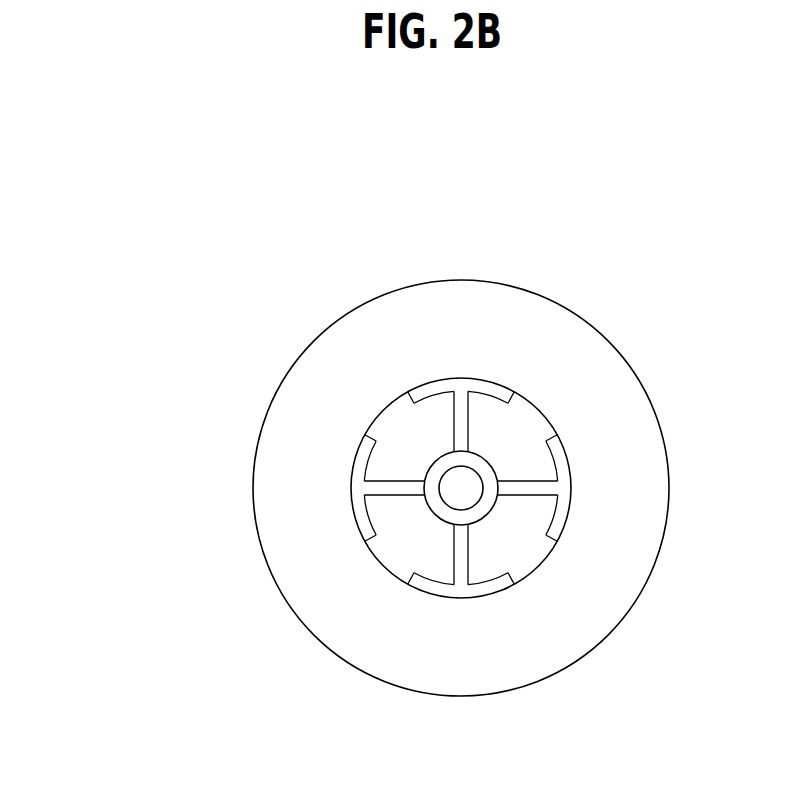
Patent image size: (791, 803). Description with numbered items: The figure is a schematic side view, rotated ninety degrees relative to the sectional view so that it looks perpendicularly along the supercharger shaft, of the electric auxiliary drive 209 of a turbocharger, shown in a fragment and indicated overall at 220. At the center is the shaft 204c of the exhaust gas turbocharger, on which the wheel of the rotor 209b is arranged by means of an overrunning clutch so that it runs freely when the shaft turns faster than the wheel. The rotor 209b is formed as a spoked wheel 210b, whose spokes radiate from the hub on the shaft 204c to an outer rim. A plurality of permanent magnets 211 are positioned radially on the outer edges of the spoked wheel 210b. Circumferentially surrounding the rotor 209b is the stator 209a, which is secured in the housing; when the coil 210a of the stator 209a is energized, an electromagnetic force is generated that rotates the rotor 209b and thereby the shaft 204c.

The flow restrictor assembly 220 is at (129, 100).
The electric auxiliary drive 209 is at (382, 207).
The stator 209a is at (449, 483).
The coil 210a is at (449, 483).
The rotor 209b is at (376, 539).
The spoked wheel 210b is at (376, 539).
The permanent magnets 211 is at (465, 495).
The shaft 204c is at (560, 400).